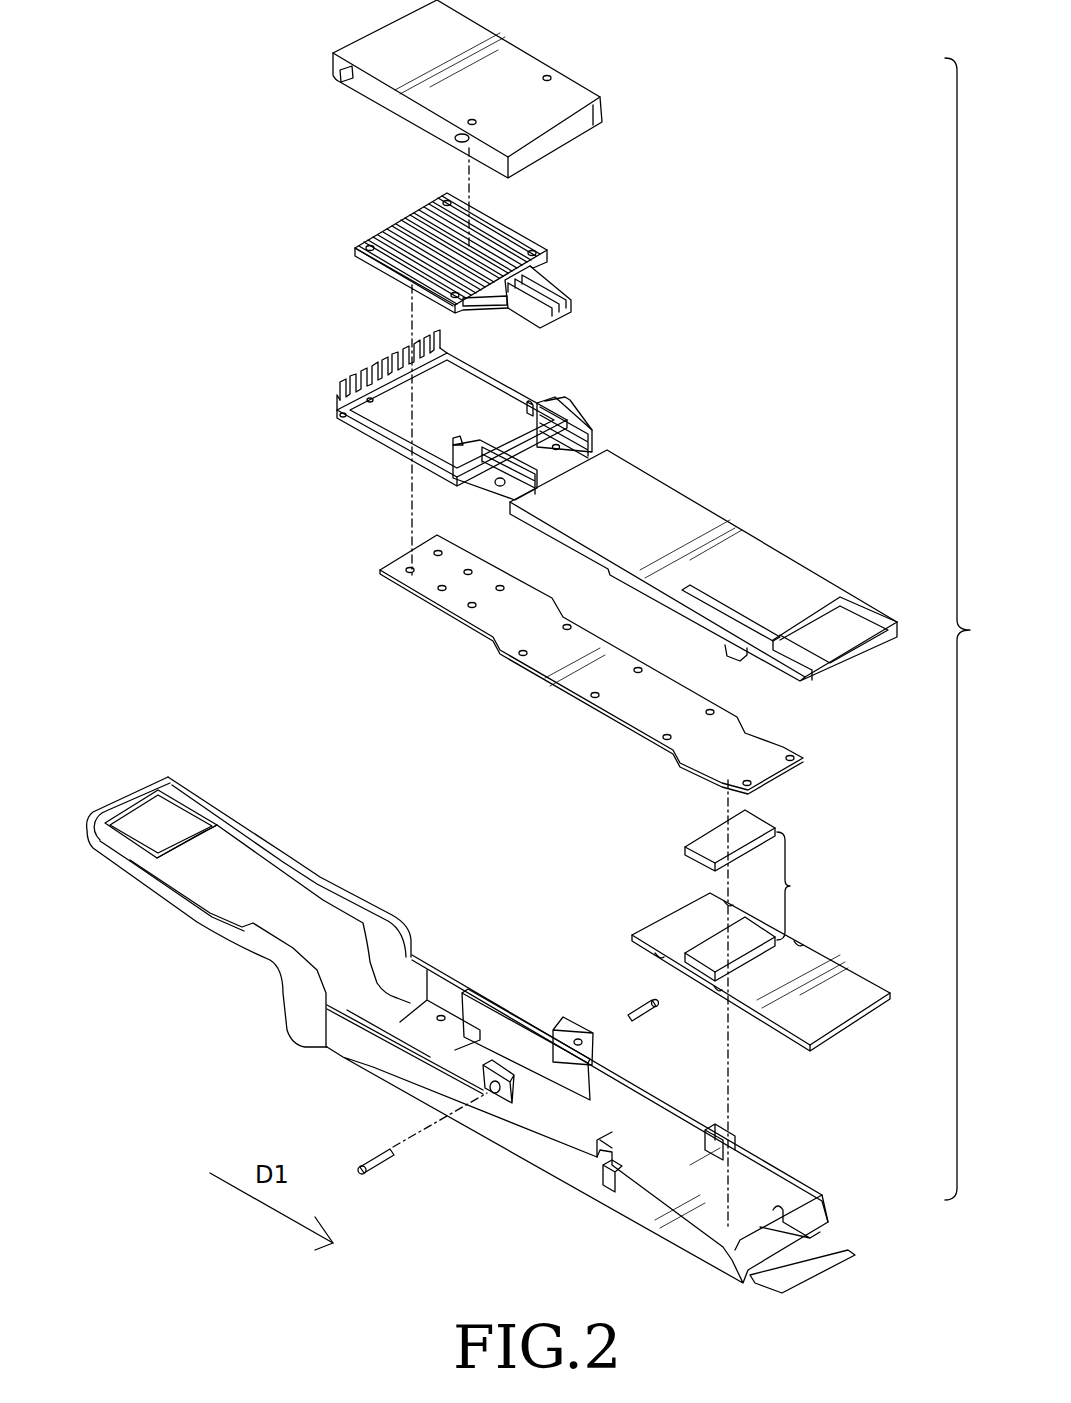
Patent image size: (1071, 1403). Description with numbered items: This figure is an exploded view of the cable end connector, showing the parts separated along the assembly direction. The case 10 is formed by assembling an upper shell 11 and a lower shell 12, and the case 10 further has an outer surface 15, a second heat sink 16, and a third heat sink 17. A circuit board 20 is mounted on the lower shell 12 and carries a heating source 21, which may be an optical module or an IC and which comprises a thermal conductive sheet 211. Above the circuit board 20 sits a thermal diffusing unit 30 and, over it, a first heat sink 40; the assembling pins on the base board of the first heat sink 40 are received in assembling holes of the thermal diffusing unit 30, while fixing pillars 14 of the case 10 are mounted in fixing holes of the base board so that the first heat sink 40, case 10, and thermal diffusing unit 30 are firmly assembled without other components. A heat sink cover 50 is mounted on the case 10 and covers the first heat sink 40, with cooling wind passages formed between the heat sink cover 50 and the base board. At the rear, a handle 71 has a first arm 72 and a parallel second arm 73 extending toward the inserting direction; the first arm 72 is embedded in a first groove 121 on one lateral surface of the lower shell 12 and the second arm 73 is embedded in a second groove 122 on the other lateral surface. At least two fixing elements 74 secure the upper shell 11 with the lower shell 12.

The case 10 is at (542, 1123).
The upper shell 11 is at (800, 575).
The lower shell 12 is at (677, 1237).
The first groove 121 is at (607, 1200).
The second groove 122 is at (707, 1130).
The fixing pillars 14 is at (531, 402).
The outer surface 15 is at (552, 467).
The second heat sink 16 is at (582, 420).
The third heat sink 17 is at (347, 378).
The circuit board 20 is at (820, 955).
The heating source 21 is at (806, 886).
The thermal conductive sheet 211 is at (707, 842).
The thermal diffusing unit 30 is at (442, 607).
The first heat sink 40 is at (378, 211).
The heat sink cover 50 is at (520, 50).
The handle 71 is at (158, 817).
The first arm 72 is at (503, 1120).
The second arm 73 is at (630, 1050).
The fixing elements 74 is at (375, 1155).